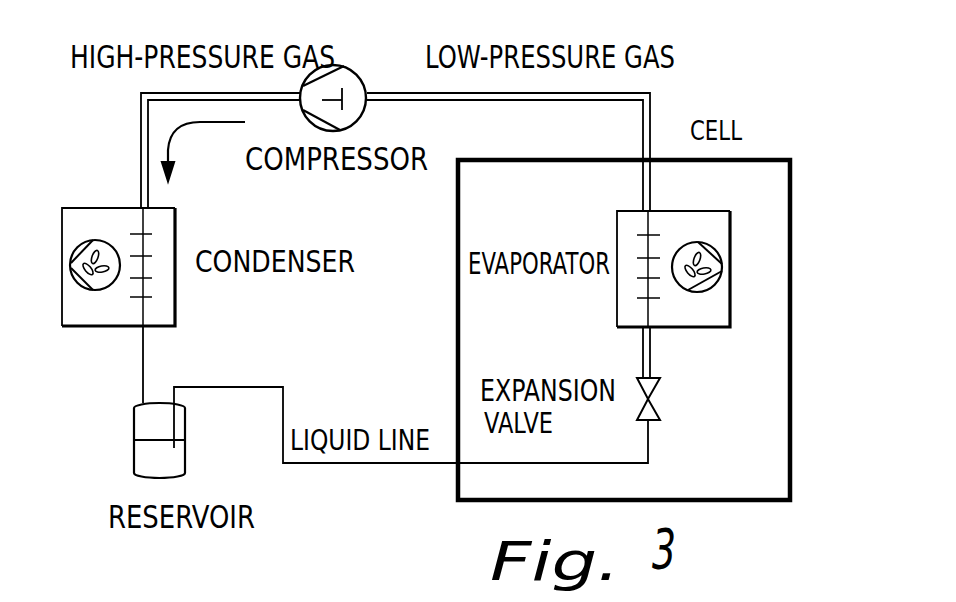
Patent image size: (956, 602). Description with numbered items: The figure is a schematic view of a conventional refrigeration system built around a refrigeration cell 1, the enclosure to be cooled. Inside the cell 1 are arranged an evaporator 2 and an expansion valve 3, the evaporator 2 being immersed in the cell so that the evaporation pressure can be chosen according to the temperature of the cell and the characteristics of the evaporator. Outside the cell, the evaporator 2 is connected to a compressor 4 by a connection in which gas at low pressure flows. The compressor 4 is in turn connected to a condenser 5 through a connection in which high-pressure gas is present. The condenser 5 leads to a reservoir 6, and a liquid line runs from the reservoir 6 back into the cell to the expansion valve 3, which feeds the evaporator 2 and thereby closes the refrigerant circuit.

The refrigeration cell 1 is at (777, 128).
The evaporator 2 is at (748, 257).
The expansion valve 3 is at (676, 394).
The compressor 4 is at (350, 82).
The condenser 5 is at (105, 220).
The reservoir 6 is at (137, 455).